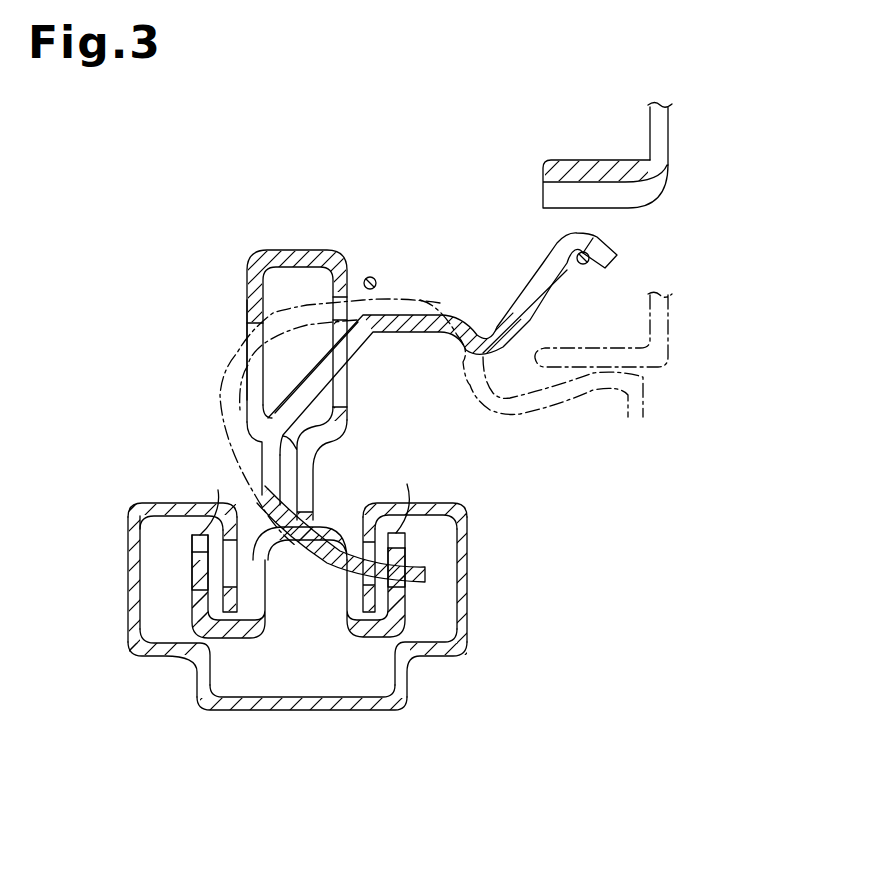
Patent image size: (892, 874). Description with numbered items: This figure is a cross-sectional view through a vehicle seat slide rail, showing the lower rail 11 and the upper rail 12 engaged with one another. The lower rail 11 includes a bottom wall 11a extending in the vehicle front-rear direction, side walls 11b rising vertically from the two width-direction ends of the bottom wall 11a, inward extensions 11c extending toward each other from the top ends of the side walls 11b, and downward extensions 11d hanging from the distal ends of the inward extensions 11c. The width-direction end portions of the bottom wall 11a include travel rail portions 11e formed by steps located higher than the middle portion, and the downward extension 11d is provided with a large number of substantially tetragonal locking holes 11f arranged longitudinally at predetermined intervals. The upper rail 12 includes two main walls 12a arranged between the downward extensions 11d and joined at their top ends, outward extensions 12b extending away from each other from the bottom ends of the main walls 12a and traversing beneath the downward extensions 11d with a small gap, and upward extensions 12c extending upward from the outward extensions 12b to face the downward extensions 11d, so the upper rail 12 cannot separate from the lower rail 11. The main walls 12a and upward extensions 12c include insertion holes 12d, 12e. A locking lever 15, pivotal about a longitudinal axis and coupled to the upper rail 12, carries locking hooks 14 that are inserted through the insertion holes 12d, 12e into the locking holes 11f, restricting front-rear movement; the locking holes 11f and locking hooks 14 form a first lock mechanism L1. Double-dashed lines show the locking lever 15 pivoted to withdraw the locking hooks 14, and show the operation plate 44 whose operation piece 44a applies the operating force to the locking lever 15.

The lower rail 11 is at (300, 600).
The bottom wall 11a is at (284, 712).
The side walls 11b is at (133, 577).
The inward extensions 11c is at (172, 504).
The downward extensions 11d is at (240, 600).
The travel rail portions 11e is at (168, 660).
The locking holes 11f is at (330, 535).
The upper rail 12 is at (317, 459).
The main walls 12a is at (246, 302).
The outward extensions 12b is at (232, 640).
The upward extensions 12c is at (317, 497).
The insertion holes 12d is at (330, 488).
The insertion holes 12e is at (406, 558).
The locking hooks 14 is at (430, 576).
The locking lever 15 is at (383, 336).
The operation plate 44 is at (614, 235).
The operation piece 44a is at (543, 186).
The first lock mechanism L1 is at (425, 604).